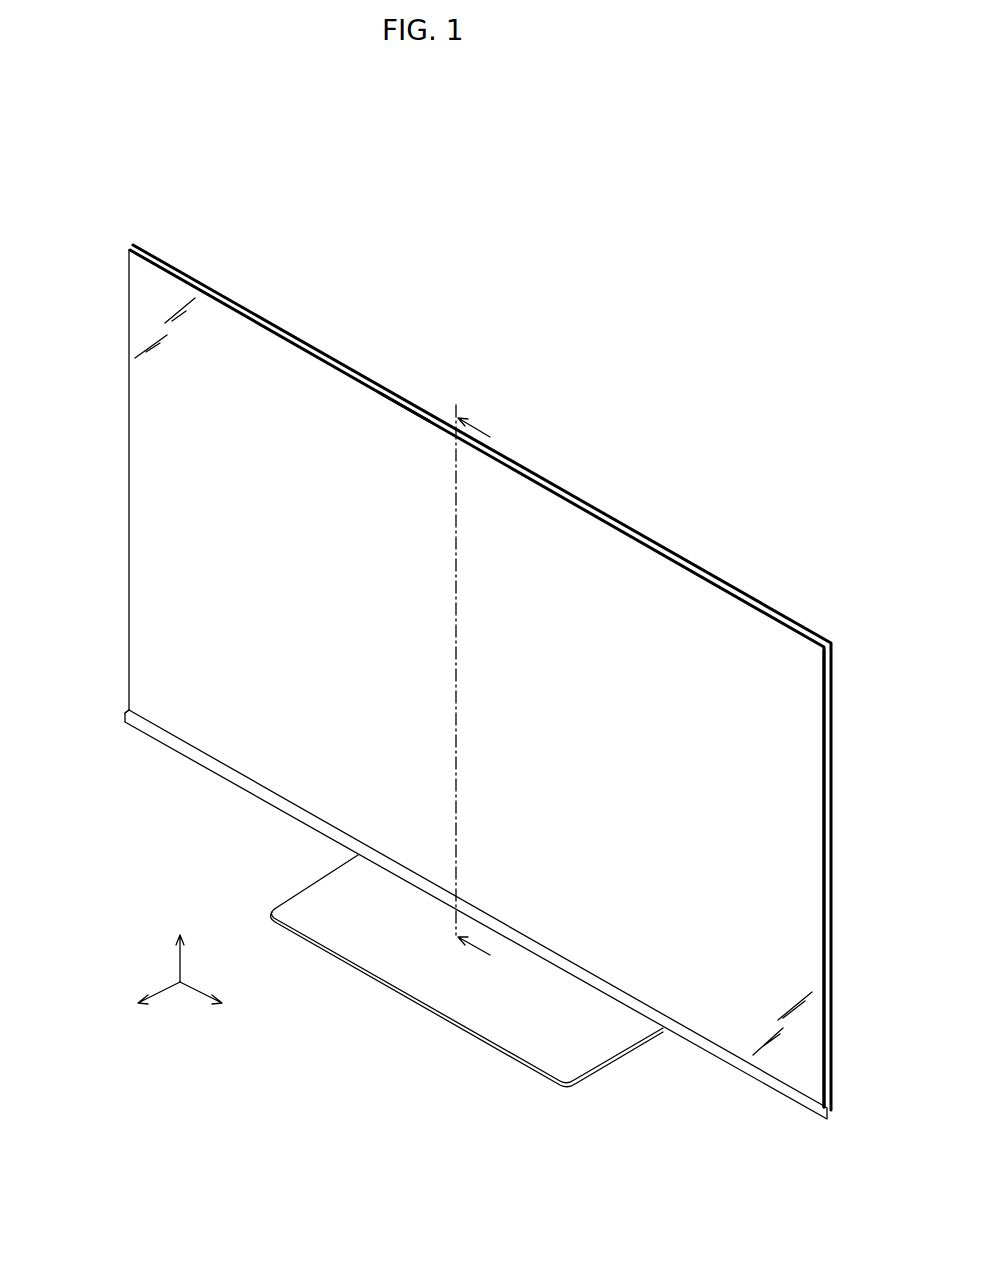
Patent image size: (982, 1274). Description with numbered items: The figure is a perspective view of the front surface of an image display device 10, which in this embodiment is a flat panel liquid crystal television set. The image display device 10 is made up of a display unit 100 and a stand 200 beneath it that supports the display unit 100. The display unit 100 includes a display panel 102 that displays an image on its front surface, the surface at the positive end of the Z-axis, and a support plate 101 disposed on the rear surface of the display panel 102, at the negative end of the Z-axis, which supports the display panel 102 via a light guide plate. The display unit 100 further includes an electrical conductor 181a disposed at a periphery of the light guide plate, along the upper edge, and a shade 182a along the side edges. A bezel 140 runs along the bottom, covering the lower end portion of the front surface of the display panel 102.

The image display device 10 is at (566, 370).
The display unit 100 is at (222, 175).
The support plate 101 is at (198, 283).
The display panel 102 is at (147, 279).
The bezel 140 is at (225, 773).
The electrical conductor 181a is at (403, 403).
The shade 182a is at (128, 462).
The stand 200 is at (643, 1048).